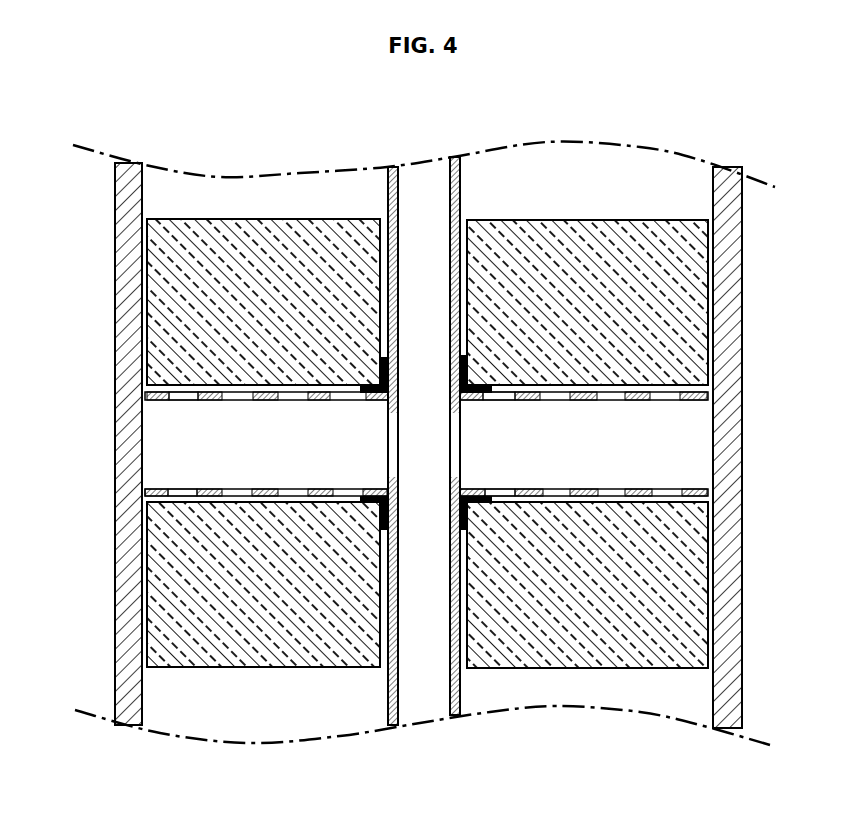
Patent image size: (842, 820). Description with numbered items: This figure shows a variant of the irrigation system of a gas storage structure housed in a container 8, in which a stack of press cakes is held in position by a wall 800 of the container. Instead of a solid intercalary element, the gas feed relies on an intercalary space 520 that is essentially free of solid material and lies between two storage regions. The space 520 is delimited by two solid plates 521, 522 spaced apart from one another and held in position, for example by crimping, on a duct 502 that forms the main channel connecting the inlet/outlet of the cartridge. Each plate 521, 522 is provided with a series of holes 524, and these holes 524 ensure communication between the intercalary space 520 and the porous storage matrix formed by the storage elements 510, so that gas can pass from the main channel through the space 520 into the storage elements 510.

The container 8 is at (128, 449).
The wall 800 is at (742, 443).
The duct 502 is at (384, 697).
The storage elements 510 is at (270, 247).
The intercalary space 520 is at (172, 423).
The plate 521 is at (322, 399).
The plate 522 is at (212, 491).
The holes 524 is at (348, 488).